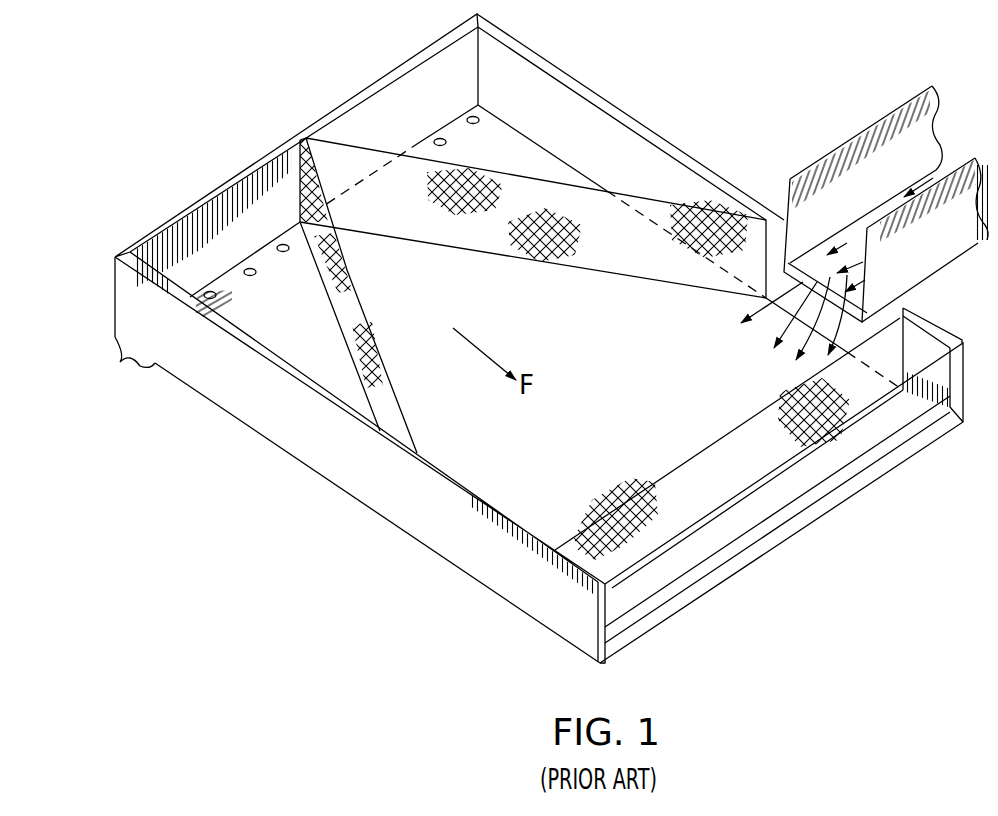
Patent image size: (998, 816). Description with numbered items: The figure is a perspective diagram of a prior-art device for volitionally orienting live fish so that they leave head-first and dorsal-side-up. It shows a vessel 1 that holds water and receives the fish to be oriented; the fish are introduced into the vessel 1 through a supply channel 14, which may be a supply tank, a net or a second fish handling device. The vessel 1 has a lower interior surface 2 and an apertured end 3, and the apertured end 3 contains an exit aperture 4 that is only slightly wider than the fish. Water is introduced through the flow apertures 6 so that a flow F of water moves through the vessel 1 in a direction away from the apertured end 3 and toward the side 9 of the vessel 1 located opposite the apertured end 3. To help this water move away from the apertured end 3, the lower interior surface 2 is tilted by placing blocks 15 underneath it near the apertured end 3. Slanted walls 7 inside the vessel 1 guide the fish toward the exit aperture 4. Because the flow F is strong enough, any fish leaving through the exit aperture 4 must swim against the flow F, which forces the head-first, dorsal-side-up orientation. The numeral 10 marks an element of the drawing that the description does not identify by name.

The vessel 1 is at (676, 111).
The lower interior surface 2 is at (609, 339).
The apertured end 3 is at (421, 76).
The exit aperture 4 is at (305, 138).
The flow apertures 6 is at (446, 142).
The slanted walls 7 is at (507, 252).
The side 9 is at (806, 518).
The ledge 10 is at (722, 424).
The supply channel 14 is at (935, 262).
The blocks 15 is at (132, 358).